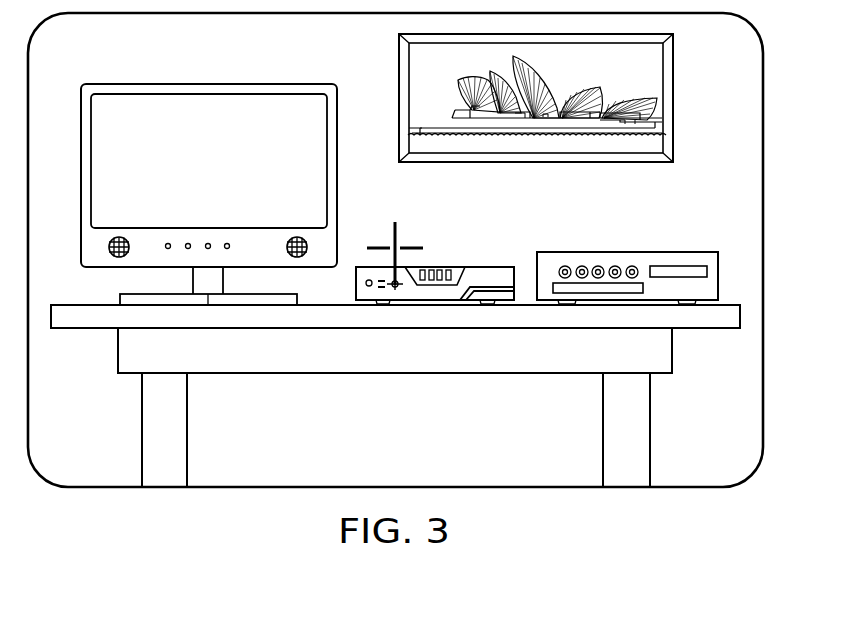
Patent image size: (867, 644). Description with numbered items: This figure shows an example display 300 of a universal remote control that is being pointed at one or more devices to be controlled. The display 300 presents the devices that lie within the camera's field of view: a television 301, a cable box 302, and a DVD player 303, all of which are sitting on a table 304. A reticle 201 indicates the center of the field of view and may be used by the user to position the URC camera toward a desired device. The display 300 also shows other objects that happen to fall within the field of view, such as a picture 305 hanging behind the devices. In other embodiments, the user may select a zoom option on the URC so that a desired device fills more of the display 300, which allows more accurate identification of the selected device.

The display 300 is at (417, 443).
The television 301 is at (205, 84).
The cable box 302 is at (490, 267).
The reticle 201 is at (398, 237).
The DVD player 303 is at (627, 252).
The table 304 is at (283, 365).
The picture 305 is at (673, 99).